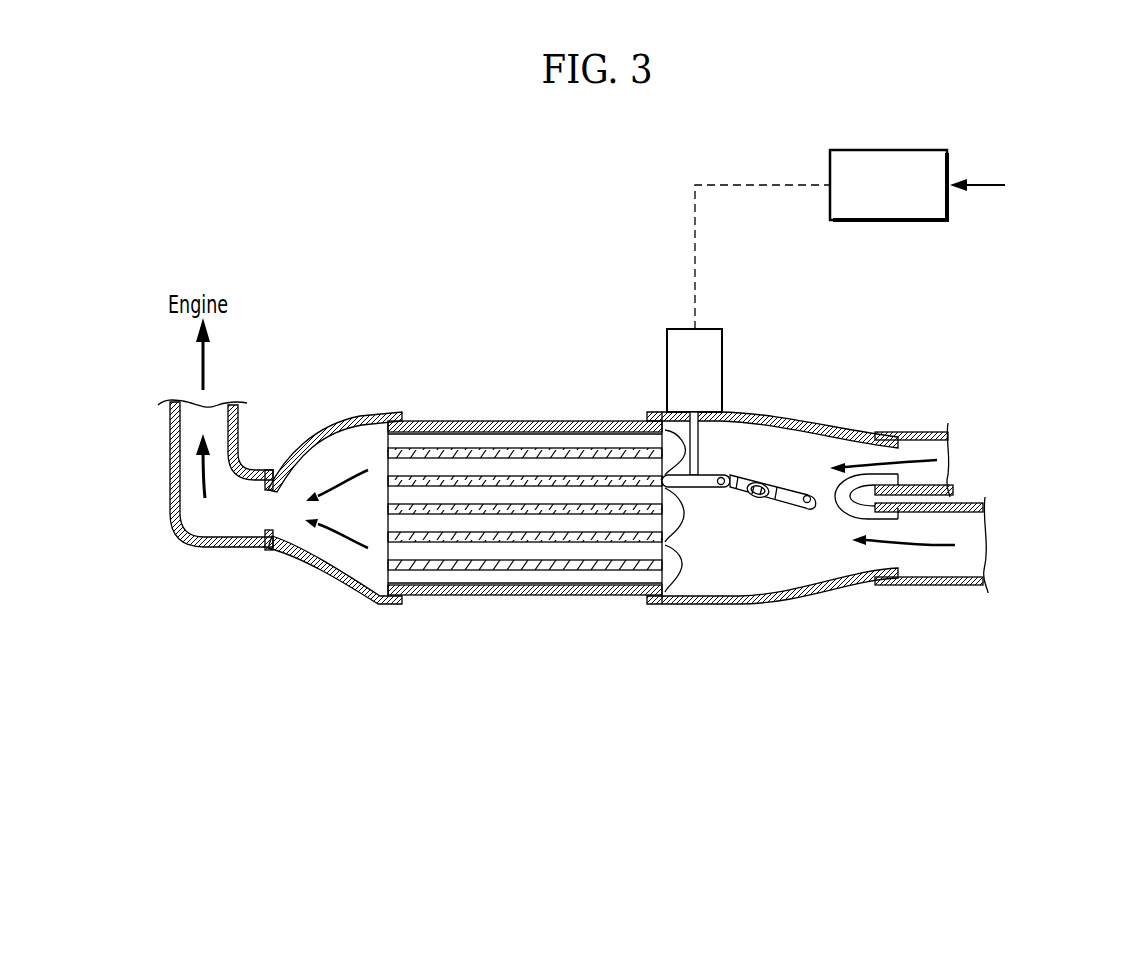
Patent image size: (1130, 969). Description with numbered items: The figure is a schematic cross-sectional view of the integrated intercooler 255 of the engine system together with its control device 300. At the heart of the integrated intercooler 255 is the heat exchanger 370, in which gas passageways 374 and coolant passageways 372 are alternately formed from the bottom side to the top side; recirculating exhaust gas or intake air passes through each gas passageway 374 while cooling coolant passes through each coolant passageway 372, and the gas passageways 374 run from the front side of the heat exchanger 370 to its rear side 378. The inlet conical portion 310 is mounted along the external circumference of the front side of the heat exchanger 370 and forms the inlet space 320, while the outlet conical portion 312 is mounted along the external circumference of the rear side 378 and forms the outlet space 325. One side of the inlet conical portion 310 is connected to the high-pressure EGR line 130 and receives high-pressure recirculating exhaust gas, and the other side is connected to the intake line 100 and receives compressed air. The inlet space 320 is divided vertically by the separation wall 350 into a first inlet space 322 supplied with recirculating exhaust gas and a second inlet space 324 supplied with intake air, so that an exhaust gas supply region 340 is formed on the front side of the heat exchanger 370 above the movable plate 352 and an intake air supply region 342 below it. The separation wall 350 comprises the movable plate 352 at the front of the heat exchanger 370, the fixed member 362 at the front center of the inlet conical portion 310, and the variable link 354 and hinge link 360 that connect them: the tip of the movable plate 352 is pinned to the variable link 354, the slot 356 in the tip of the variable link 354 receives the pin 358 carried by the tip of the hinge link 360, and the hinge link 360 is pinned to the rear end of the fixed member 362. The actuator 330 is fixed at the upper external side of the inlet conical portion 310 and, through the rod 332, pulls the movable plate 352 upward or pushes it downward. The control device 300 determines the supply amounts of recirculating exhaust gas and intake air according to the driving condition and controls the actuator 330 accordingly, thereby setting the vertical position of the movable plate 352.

The intake line 100 is at (170, 452).
The high-pressure EGR line 130 is at (921, 432).
The integrated intercooler 255 is at (507, 535).
The control device 300 is at (885, 150).
The inlet conical portion 310 is at (755, 501).
The outlet conical portion 312 is at (327, 567).
The inlet space 320 is at (767, 371).
The first inlet space 322 is at (700, 445).
The second inlet space 324 is at (797, 455).
The outlet space 325 is at (329, 538).
The actuator 330 is at (694, 365).
The rod 332 is at (720, 470).
The exhaust gas supply region 340 is at (667, 412).
The intake air supply region 342 is at (670, 596).
The separation wall 350 is at (779, 611).
The movable plate 352 is at (694, 488).
The variable link 354 is at (719, 486).
The slot 356 is at (752, 500).
The pin 358 is at (780, 505).
The hinge link 360 is at (836, 505).
The fixed member 362 is at (874, 635).
The heat exchanger 370 is at (507, 520).
The coolant passageway 372 is at (523, 565).
The gas passageway 374 is at (592, 576).
The rear side 378 is at (388, 557).